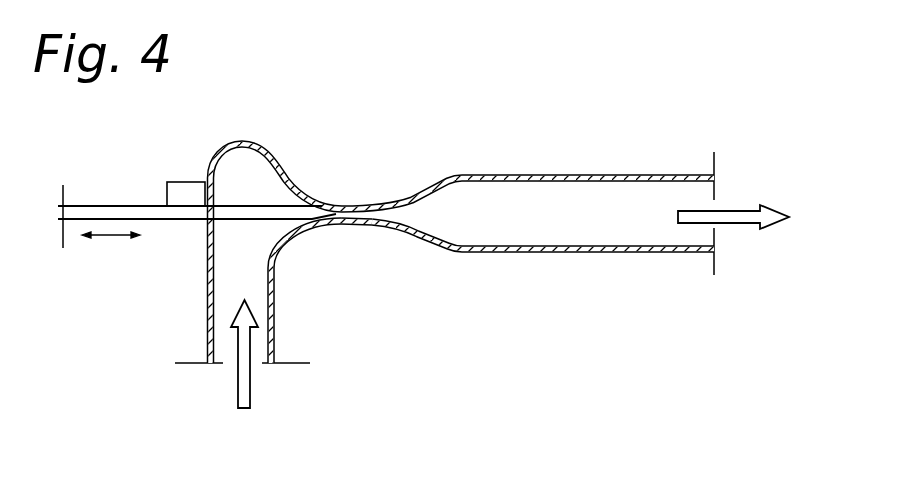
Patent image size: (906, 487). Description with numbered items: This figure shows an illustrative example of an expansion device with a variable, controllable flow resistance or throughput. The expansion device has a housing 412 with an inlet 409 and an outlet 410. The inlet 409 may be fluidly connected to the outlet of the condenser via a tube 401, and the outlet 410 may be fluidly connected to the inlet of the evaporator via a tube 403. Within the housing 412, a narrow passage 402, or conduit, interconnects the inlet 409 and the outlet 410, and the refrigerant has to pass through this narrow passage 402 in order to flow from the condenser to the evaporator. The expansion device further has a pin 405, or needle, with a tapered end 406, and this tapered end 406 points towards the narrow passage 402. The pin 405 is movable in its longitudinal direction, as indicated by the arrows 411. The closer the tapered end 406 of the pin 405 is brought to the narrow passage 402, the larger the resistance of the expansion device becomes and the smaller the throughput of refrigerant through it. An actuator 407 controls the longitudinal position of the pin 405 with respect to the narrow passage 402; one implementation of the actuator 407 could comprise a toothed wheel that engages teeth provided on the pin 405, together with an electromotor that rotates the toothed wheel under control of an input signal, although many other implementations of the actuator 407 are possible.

The tube 401 is at (278, 322).
The narrow passage 402 is at (366, 229).
The tube 403 is at (607, 252).
The pin 405 is at (250, 220).
The tapered end 406 is at (338, 225).
The actuator 407 is at (187, 188).
The inlet 409 is at (247, 387).
The outlet 410 is at (728, 217).
The arrows 411 is at (113, 238).
The housing 412 is at (263, 142).